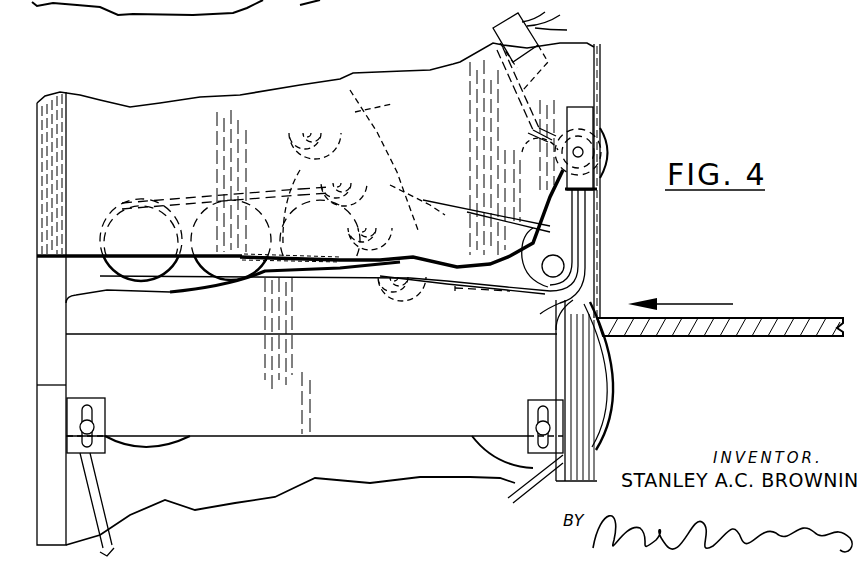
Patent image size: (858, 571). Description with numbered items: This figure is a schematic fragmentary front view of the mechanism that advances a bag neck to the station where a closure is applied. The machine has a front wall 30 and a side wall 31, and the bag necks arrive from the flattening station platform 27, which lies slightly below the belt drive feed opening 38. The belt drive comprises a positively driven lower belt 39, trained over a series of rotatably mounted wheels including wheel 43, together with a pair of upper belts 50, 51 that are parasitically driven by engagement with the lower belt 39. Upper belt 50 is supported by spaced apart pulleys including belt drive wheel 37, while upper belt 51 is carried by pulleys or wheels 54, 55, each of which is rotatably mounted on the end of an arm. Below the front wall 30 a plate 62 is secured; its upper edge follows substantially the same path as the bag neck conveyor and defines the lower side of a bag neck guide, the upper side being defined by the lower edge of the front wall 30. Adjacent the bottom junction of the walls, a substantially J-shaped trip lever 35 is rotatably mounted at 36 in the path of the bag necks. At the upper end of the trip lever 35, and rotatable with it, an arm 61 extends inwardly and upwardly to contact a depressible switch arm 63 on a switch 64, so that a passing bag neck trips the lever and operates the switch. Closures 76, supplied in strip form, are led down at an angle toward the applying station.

The flattening station platform 27 is at (783, 326).
The front wall 30 is at (249, 108).
The side wall 31 is at (598, 78).
The trip lever 35 is at (580, 225).
The pivot mounting 36 is at (580, 152).
The belt drive wheel 37 is at (588, 263).
The belt drive feed opening 38 is at (592, 301).
The lower belt 39 is at (115, 534).
The wheel 43 is at (604, 388).
The upper belt 50 is at (463, 202).
The upper belt 51 is at (195, 190).
The pulley 54 is at (228, 265).
The pulley 55 is at (146, 266).
The arm 61 is at (533, 157).
The plate 62 is at (419, 392).
The depressible switch arm 63 is at (528, 98).
The switch 64 is at (505, 33).
The closures 76 is at (372, 118).